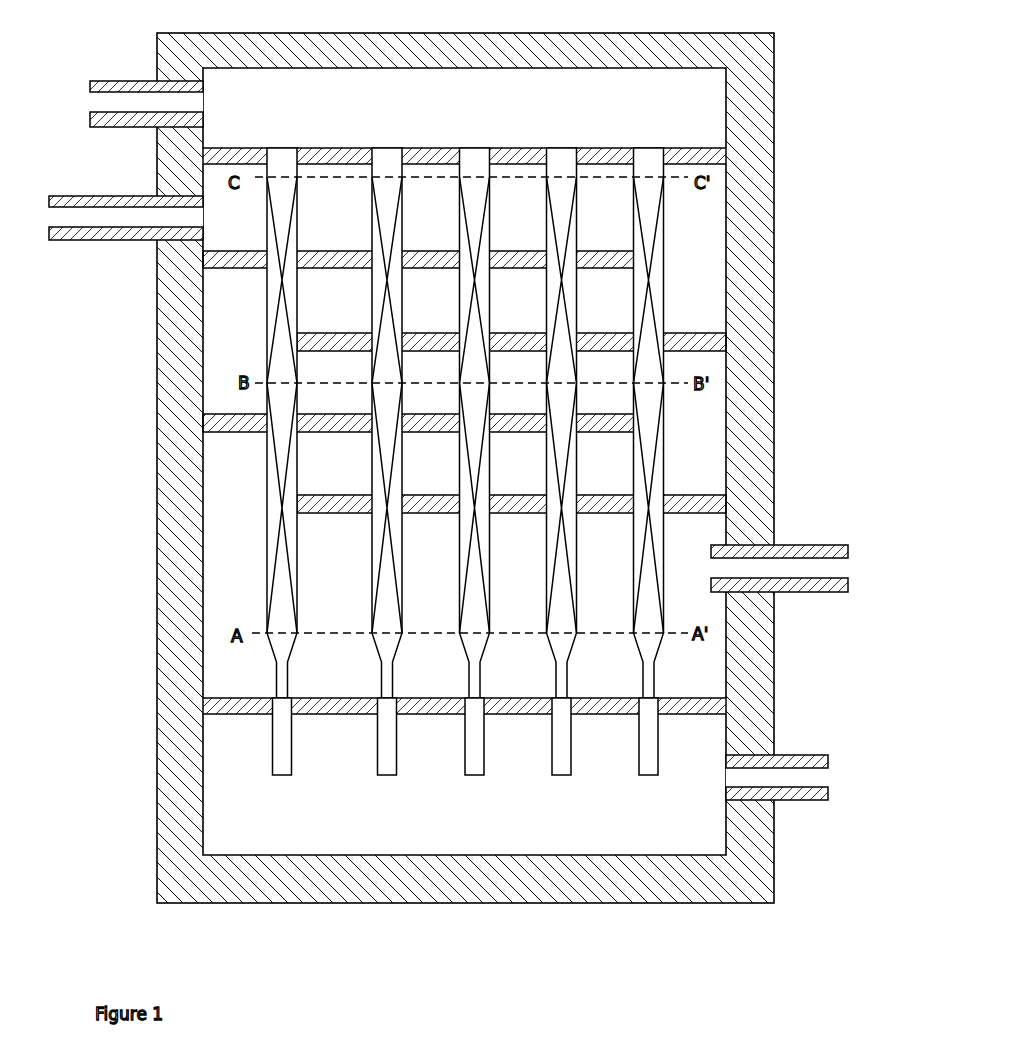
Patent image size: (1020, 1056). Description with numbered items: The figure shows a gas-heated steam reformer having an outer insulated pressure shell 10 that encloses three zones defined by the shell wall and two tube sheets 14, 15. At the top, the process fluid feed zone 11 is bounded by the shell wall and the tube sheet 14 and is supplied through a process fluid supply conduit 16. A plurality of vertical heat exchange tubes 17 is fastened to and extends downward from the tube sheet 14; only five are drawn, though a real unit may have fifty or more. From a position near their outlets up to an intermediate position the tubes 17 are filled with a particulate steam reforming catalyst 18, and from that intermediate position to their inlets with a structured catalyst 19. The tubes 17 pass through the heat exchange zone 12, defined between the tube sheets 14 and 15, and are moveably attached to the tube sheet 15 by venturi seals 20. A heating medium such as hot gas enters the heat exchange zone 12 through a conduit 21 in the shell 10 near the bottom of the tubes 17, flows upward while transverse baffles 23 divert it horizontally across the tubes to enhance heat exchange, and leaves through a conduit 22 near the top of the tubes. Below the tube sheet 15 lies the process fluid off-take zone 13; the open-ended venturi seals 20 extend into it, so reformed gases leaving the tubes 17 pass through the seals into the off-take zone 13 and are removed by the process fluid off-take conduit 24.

The outer insulated pressure shell 10 is at (745, 353).
The process fluid feed zone 11 is at (711, 112).
The heat exchange zone 12 is at (711, 268).
The process fluid off-take zone 13 is at (700, 790).
The tube sheet 14 is at (358, 155).
The tube sheet 15 is at (245, 705).
The process fluid supply conduit 16 is at (127, 80).
The vertical heat exchange tubes 17 is at (478, 163).
The particulate steam reforming catalyst 18 is at (278, 488).
The structured catalyst 19 is at (276, 273).
The venturi seals 20 is at (383, 750).
The conduit 21 is at (798, 557).
The conduit 22 is at (112, 230).
The transverse baffles 23 is at (692, 508).
The process fluid off-take conduit 24 is at (798, 763).